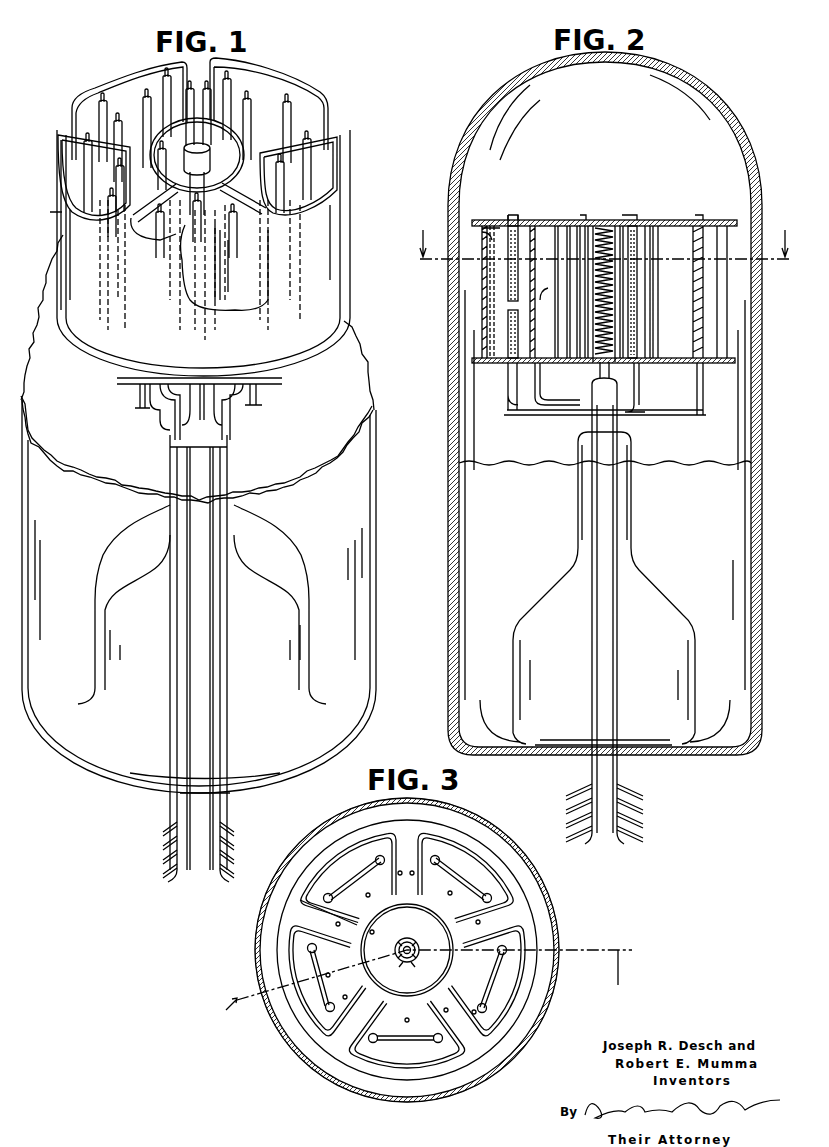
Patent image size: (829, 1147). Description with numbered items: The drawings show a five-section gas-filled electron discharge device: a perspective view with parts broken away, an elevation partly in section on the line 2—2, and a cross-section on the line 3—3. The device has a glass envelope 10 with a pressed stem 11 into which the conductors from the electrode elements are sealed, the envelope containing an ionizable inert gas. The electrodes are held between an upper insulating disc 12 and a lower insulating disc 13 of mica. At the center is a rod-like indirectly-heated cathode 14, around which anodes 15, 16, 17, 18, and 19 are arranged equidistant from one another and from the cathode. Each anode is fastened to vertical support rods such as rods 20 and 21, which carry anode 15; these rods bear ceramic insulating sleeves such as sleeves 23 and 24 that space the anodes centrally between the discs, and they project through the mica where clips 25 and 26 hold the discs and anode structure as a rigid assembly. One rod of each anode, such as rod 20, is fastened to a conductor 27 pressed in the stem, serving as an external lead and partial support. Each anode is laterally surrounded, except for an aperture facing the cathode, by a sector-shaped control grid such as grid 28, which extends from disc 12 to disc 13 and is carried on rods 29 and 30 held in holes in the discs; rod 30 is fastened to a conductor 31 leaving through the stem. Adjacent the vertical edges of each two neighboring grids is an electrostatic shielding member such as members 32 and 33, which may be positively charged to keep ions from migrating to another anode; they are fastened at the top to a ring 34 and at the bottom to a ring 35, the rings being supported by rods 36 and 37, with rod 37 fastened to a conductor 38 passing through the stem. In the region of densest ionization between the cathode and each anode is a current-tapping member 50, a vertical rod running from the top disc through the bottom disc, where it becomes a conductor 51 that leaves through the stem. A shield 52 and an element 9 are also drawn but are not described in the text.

In FIG. 3, the section line 2- 2 is at (232, 1043).
In FIG. 2, the section line 3- 3 is at (604, 235).
In FIG. 1, the electrode lead 9 is at (146, 97).
In FIG. 3, the electrode lead 9 is at (390, 884).
In FIG. 1, the glass envelope 10 is at (374, 408).
In FIG. 2, the glass envelope 10 is at (452, 288).
In FIG. 3, the glass envelope 10 is at (503, 845).
In FIG. 1, the pressed stem 11 is at (218, 462).
In FIG. 2, the pressed stem 11 is at (628, 452).
In FIG. 2, the upper insulating disc 12 is at (665, 220).
In FIG. 1, the lower insulating disc 13 is at (343, 284).
In FIG. 2, the lower insulating disc 13 is at (484, 364).
In FIG. 3, the lower insulating disc 13 is at (530, 912).
In FIG. 1, the indirectly-heated cathode 14 is at (204, 144).
In FIG. 2, the indirectly-heated cathode 14 is at (606, 218).
In FIG. 3, the indirectly-heated cathode 14 is at (410, 946).
In FIG. 1, the anode 15 is at (90, 196).
In FIG. 2, the anode 15 is at (509, 285).
In FIG. 3, the anode 15 is at (350, 943).
In FIG. 3, the anode 16 is at (367, 878).
In FIG. 3, the anode 17 is at (462, 876).
In FIG. 1, the anode 18 is at (298, 176).
In FIG. 2, the anode 18 is at (693, 293).
In FIG. 3, the anode 18 is at (476, 980).
In FIG. 1, the anode 19 is at (183, 290).
In FIG. 3, the anode 19 is at (398, 1040).
In FIG. 1, the vertical support rod 20 is at (94, 177).
In FIG. 2, the vertical support rod 20 is at (514, 218).
In FIG. 3, the vertical support rod 20 is at (307, 960).
In FIG. 1, the vertical support rod 21 is at (104, 218).
In FIG. 3, the vertical support rod 21 is at (320, 981).
In FIG. 2, the ceramic insulating sleeve 23 is at (493, 230).
In FIG. 2, the ceramic insulating sleeve 24 is at (508, 370).
In FIG. 2, the clip 25 is at (533, 218).
In FIG. 2, the clip 26 is at (508, 412).
In FIG. 2, the conductor 27 is at (550, 418).
In FIG. 1, the control grid 28 is at (50, 213).
In FIG. 2, the control grid 28 is at (488, 300).
In FIG. 3, the control grid 28 is at (290, 968).
In FIG. 1, the support rod 29 is at (120, 126).
In FIG. 3, the support rod 29 is at (320, 912).
In FIG. 1, the support rod 30 is at (193, 211).
In FIG. 3, the support rod 30 is at (327, 981).
In FIG. 1, the conductor 31 is at (143, 410).
In FIG. 1, the electrostatic shielding member 32 is at (245, 132).
In FIG. 2, the electrostatic shielding member 32 is at (583, 218).
In FIG. 3, the electrostatic shielding member 32 is at (392, 912).
In FIG. 3, the electrostatic shielding member 33 is at (401, 972).
In FIG. 1, the ring 34 is at (194, 190).
In FIG. 2, the ring 34 is at (557, 218).
In FIG. 2, the ring 35 is at (646, 370).
In FIG. 3, the ring 35 is at (486, 981).
In FIG. 1, the rod 36 is at (269, 104).
In FIG. 3, the rod 36 is at (465, 877).
In FIG. 1, the rod 37 is at (167, 165).
In FIG. 3, the rod 37 is at (406, 1034).
In FIG. 1, the conductor 38 is at (165, 412).
In FIG. 1, the current-tapping member 50 is at (118, 160).
In FIG. 2, the current-tapping member 50 is at (544, 285).
In FIG. 3, the current-tapping member 50 is at (340, 980).
In FIG. 2, the conductor 51 is at (565, 392).
In FIG. 1, the shield 52 is at (150, 70).
In FIG. 3, the shield 52 is at (345, 845).